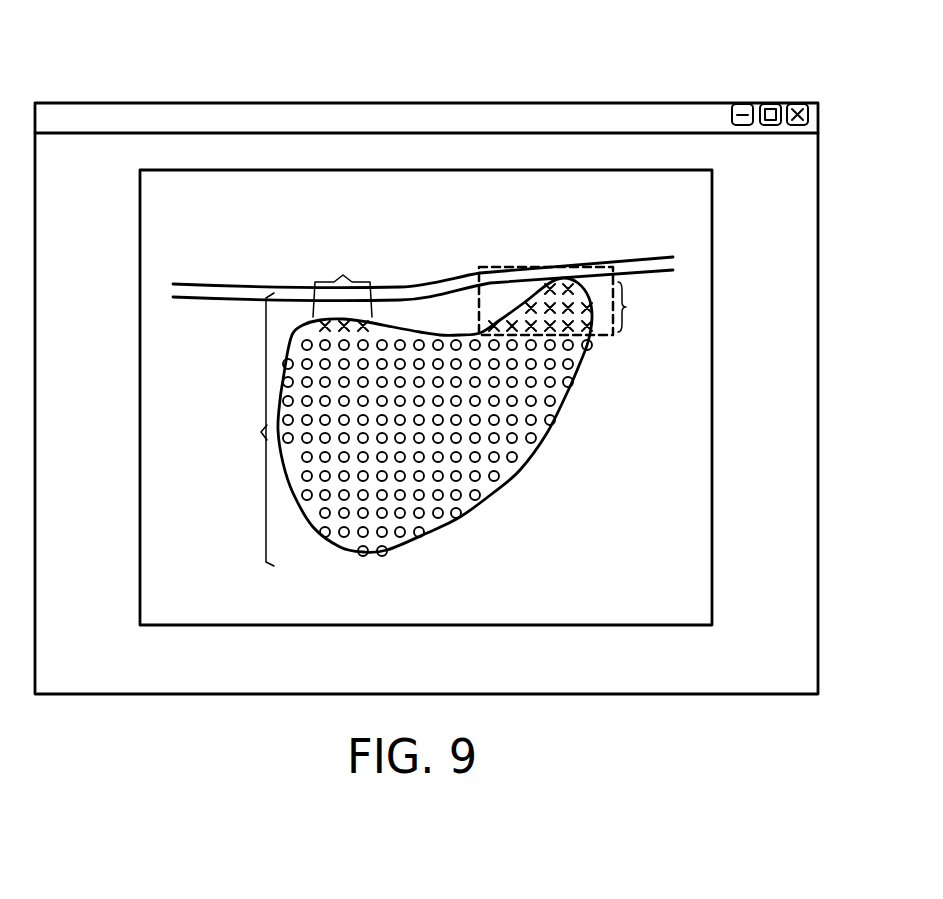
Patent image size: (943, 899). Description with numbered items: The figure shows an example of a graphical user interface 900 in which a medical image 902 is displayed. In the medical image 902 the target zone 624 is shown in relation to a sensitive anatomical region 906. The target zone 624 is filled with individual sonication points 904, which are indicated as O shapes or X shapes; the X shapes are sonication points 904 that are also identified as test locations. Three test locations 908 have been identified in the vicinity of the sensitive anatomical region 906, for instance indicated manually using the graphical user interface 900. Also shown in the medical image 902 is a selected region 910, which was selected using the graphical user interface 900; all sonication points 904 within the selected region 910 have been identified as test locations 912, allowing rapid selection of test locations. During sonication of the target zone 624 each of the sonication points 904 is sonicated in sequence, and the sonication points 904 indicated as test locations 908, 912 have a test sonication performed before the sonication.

The graphical user interface 900 is at (651, 102).
The medical image 902 is at (713, 397).
The sonication points 904 is at (245, 429).
The sensitive anatomical region 906 is at (393, 292).
The test locations 908 is at (342, 284).
The selected region 910 is at (600, 267).
The test locations 912 is at (578, 307).
The target zone 624 is at (510, 473).